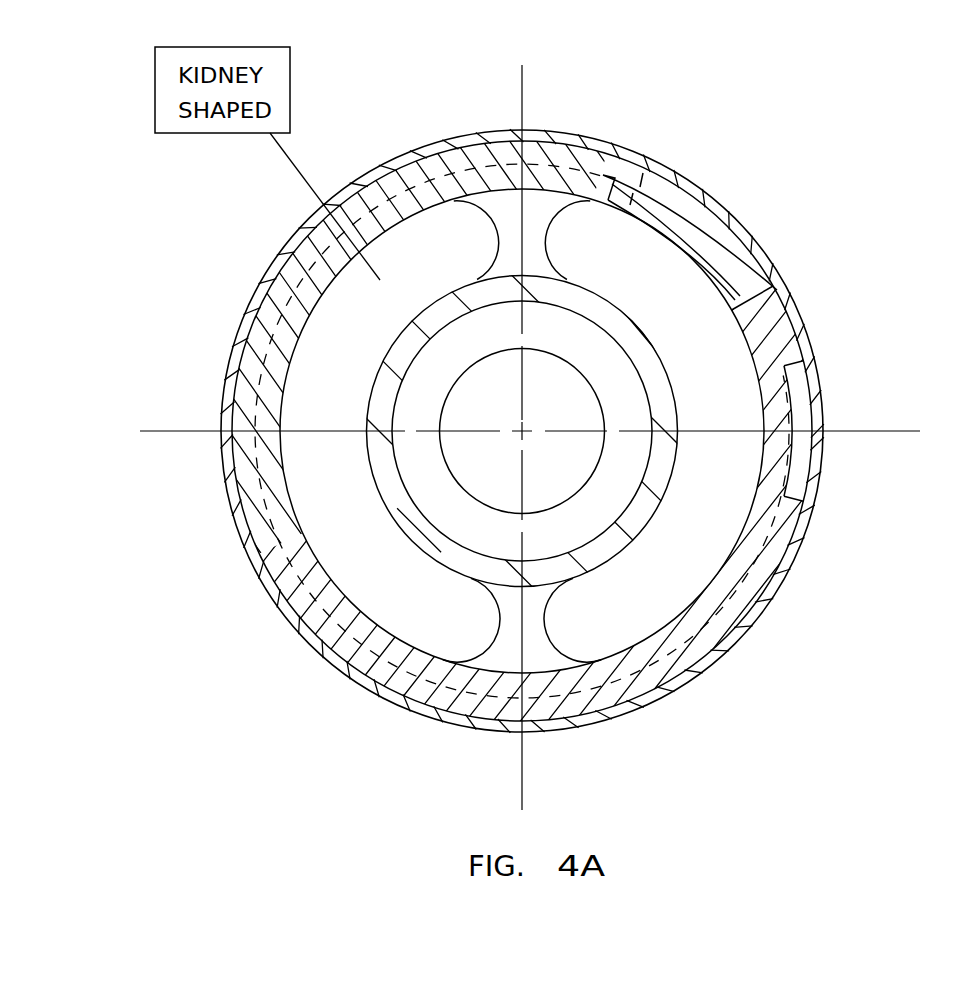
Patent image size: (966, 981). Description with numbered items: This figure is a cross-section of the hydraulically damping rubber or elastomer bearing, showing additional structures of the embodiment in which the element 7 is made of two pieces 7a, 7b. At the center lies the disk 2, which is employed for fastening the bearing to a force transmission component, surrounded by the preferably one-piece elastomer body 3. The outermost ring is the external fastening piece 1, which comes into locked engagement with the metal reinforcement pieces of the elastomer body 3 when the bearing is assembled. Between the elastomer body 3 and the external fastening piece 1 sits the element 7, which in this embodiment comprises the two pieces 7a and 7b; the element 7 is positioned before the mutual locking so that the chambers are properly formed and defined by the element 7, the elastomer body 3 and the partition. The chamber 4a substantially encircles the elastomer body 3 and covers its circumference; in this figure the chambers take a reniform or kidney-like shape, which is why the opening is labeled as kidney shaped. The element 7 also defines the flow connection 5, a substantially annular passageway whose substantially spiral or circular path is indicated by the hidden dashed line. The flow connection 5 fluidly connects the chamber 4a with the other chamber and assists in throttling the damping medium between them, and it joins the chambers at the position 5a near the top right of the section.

The external fastening piece 1 is at (823, 441).
The disk 2 is at (620, 417).
The elastomer body 3 is at (390, 483).
The chamber 4a is at (722, 405).
The flow connection 5 is at (803, 485).
The position 5a is at (602, 175).
The element 7 is at (707, 607).
The piece 7a is at (287, 260).
The piece 7b is at (347, 650).